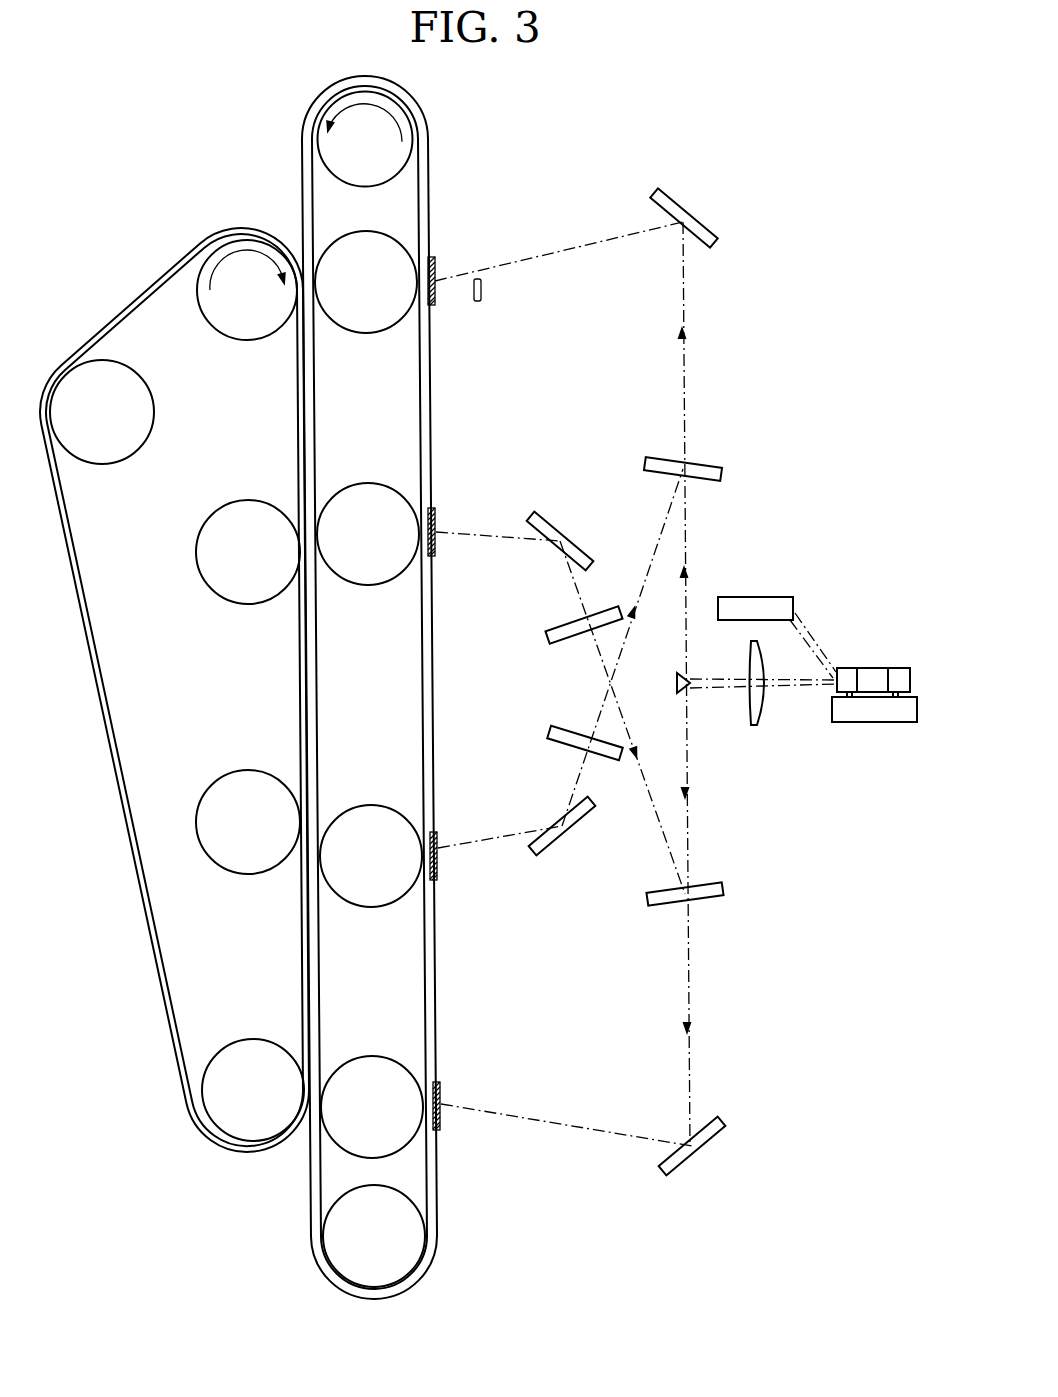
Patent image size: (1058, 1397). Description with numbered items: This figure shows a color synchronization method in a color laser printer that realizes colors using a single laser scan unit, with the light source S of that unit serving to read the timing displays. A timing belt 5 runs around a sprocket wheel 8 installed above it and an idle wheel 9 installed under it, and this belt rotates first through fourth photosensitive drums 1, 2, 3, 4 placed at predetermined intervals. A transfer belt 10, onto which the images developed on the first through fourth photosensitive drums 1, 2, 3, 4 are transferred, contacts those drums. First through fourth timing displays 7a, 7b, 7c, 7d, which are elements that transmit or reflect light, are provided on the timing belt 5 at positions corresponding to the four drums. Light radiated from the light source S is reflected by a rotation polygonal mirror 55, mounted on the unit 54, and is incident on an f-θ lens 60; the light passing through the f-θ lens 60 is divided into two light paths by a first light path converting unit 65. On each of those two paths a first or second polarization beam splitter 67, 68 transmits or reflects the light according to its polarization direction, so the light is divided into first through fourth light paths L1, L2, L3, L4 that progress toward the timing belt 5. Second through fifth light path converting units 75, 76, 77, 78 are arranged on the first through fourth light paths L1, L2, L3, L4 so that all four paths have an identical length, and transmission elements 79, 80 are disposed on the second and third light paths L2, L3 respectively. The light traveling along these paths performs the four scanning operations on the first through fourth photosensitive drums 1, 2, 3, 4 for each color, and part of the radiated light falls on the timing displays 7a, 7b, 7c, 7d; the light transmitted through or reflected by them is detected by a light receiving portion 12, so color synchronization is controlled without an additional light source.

The first photosensitive drum 1 is at (370, 232).
The second photosensitive drum 2 is at (370, 483).
The third photosensitive drum 3 is at (370, 805).
The fourth photosensitive drum 4 is at (373, 1055).
The timing belt 5 is at (434, 1017).
The first timing display 7a is at (436, 262).
The second timing display 7b is at (437, 535).
The third timing display 7c is at (441, 865).
The fourth timing display 7d is at (442, 1113).
The sprocket wheel 8 is at (330, 143).
The idle wheel 9 is at (342, 1240).
The transfer belt 10 is at (140, 305).
The light receiving portion 12 is at (479, 303).
The polygon mirror motor 54 is at (873, 722).
The rotation polygonal mirror 55 is at (873, 668).
The f-θ lens 60 is at (754, 726).
The first light path converting unit 65 is at (676, 685).
The first polarization beam splitter 67 is at (696, 462).
The second polarization beam splitter 68 is at (700, 903).
The second light path converting unit 75 is at (693, 214).
The third light path converting unit 76 is at (560, 846).
The fourth light path converting unit 77 is at (558, 527).
The fifth light path converting unit 78 is at (700, 1148).
The transmission element 79 is at (549, 735).
The transmission element 80 is at (549, 636).
The light source S is at (755, 597).
The first light path L1 is at (559, 251).
The second light path L2 is at (622, 647).
The third light path L3 is at (622, 717).
The fourth light path L4 is at (566, 1114).